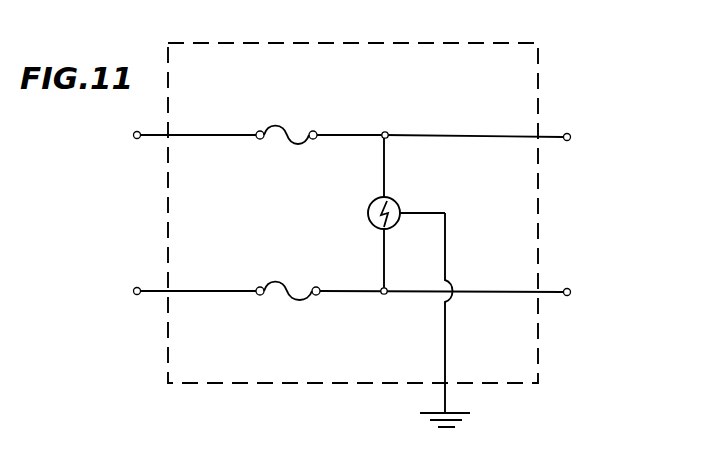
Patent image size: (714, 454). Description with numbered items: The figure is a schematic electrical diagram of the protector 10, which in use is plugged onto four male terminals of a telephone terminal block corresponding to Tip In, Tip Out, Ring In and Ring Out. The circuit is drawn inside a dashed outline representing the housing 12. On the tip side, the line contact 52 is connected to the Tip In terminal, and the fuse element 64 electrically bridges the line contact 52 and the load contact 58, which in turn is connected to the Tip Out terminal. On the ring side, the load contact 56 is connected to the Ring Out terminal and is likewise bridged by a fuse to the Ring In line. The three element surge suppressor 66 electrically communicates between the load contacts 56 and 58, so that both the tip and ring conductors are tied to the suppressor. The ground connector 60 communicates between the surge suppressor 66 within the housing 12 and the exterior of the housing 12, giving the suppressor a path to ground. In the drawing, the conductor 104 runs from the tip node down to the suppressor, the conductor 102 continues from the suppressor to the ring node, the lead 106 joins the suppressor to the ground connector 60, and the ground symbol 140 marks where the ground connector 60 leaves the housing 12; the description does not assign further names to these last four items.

The protector 10 is at (557, 57).
The housing 12 is at (352, 44).
The line contact 52 is at (190, 136).
The load contact 56 is at (478, 293).
The load contact 58 is at (425, 135).
The ground connector 60 is at (447, 242).
The fuse element 64 is at (275, 140).
The three element surge suppressor 66 is at (368, 218).
The lower conductor 102 is at (383, 276).
The upper conductor 104 is at (388, 150).
The arrester ground lead 106 is at (420, 213).
The ground 140 is at (445, 395).